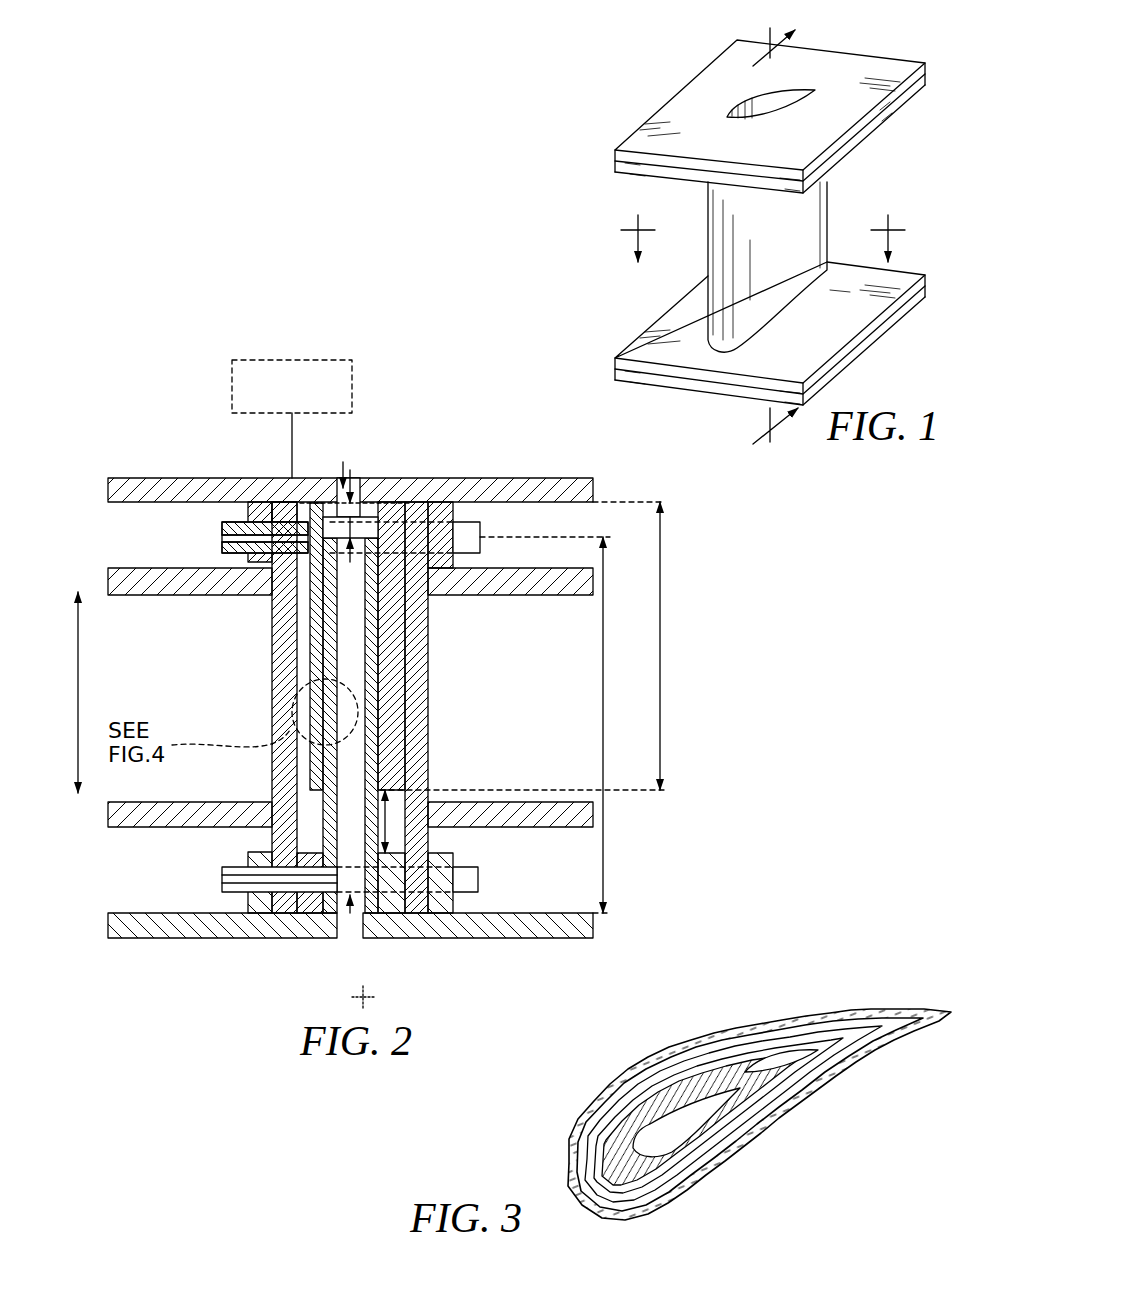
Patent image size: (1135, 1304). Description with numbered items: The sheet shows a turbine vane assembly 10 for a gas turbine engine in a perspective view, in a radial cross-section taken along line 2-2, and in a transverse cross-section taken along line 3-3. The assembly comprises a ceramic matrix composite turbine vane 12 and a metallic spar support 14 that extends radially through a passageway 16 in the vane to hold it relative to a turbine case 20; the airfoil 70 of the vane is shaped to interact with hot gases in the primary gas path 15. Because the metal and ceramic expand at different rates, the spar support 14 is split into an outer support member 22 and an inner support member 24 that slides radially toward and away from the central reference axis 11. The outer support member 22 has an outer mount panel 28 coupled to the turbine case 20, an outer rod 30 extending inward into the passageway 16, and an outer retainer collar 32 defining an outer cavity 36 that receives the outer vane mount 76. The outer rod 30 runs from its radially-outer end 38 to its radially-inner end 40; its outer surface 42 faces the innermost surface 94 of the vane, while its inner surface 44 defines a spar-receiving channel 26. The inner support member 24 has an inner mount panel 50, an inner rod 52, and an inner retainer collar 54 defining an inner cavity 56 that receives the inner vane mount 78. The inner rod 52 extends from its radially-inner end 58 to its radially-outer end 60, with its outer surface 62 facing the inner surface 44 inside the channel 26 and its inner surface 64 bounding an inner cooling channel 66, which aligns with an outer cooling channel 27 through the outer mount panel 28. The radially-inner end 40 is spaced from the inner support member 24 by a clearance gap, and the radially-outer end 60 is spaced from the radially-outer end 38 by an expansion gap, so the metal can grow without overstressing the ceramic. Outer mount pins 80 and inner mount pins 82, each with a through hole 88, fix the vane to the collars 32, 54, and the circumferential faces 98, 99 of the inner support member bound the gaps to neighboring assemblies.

In FIG. 1, the turbine vane assembly 10 is at (625, 72).
In FIG. 2, the turbine vane assembly 10 is at (100, 390).
In FIG. 3, the turbine vane assembly 10 is at (740, 945).
In FIG. 1, the turbine vane 12 is at (660, 288).
In FIG. 2, the turbine vane 12 is at (499, 660).
In FIG. 1, the spar support 14 is at (628, 122).
In FIG. 2, the spar support 14 is at (78, 702).
In FIG. 1, the primary gas path 15 is at (704, 250).
In FIG. 2, the primary gas path 15 is at (212, 704).
In FIG. 3, the passageway 16 is at (882, 1033).
In FIG. 2, the turbine case 20 is at (290, 360).
In FIG. 2, the outer support member 22 is at (120, 512).
In FIG. 2, the inner support member 24 is at (135, 878).
In FIG. 2, the spar-receiving channel 26 is at (356, 523).
In FIG. 3, the spar-receiving channel 26 is at (587, 1158).
In FIG. 2, the outer cooling channel 27 is at (343, 462).
In FIG. 2, the outer mount panel 28 is at (155, 478).
In FIG. 2, the outer rod 30 is at (300, 658).
In FIG. 3, the outer rod 30 is at (703, 1068).
In FIG. 2, the outer retainer collar 32 is at (248, 510).
In FIG. 3, the outer retainer collar 32 is at (748, 1126).
In FIG. 2, the outer cavity 36 is at (287, 510).
In FIG. 2, the radially-outer end 38 is at (393, 553).
In FIG. 2, the radially-inner end 40 is at (317, 792).
In FIG. 3, the outer surface 42 is at (804, 1045).
In FIG. 3, the inner surface 44 is at (784, 1062).
In FIG. 2, the inner mount panel 50 is at (538, 938).
In FIG. 2, the inner rod 52 is at (388, 690).
In FIG. 2, the inner retainer collar 54 is at (453, 853).
In FIG. 2, the inner cavity 56 is at (287, 903).
In FIG. 2, the radially-inner end 58 is at (318, 913).
In FIG. 2, the radially-outer end 60 is at (330, 518).
In FIG. 3, the outer surface 62 is at (706, 1170).
In FIG. 3, the inner surface 64 is at (640, 1132).
In FIG. 2, the inner cooling channel 66 is at (348, 905).
In FIG. 3, the inner cooling channel 66 is at (684, 1112).
In FIG. 3, the airfoil 70 is at (667, 1058).
In FIG. 2, the outer vane mount 76 is at (415, 500).
In FIG. 2, the inner vane mount 78 is at (418, 913).
In FIG. 2, the outer mount pins 80 is at (487, 537).
In FIG. 2, the inner mount pins 82 is at (487, 880).
In FIG. 2, the through hole 88 is at (220, 878).
In FIG. 3, the innermost surface 94 is at (584, 1174).
In FIG. 2, the circumferential face 98 is at (108, 920).
In FIG. 2, the circumferential face 99 is at (593, 925).
In FIG. 2, the central reference axis 11 is at (363, 997).
In FIG. 1, the section line 2- 2 is at (764, 247).
In FIG. 1, the section line 3- 3 is at (763, 222).